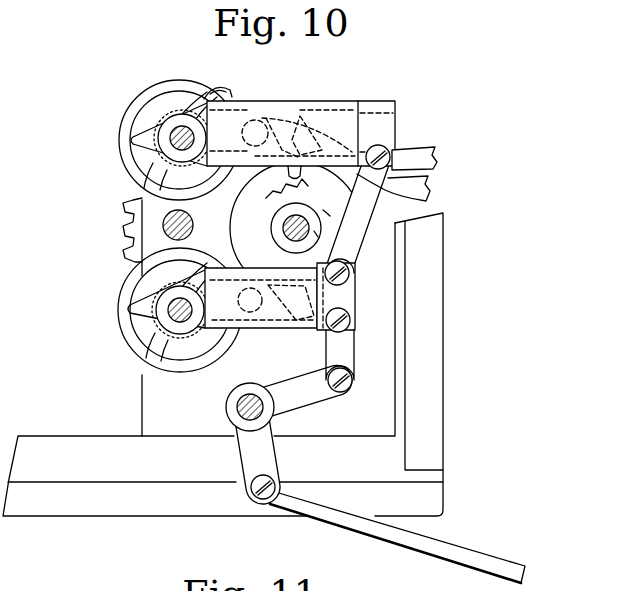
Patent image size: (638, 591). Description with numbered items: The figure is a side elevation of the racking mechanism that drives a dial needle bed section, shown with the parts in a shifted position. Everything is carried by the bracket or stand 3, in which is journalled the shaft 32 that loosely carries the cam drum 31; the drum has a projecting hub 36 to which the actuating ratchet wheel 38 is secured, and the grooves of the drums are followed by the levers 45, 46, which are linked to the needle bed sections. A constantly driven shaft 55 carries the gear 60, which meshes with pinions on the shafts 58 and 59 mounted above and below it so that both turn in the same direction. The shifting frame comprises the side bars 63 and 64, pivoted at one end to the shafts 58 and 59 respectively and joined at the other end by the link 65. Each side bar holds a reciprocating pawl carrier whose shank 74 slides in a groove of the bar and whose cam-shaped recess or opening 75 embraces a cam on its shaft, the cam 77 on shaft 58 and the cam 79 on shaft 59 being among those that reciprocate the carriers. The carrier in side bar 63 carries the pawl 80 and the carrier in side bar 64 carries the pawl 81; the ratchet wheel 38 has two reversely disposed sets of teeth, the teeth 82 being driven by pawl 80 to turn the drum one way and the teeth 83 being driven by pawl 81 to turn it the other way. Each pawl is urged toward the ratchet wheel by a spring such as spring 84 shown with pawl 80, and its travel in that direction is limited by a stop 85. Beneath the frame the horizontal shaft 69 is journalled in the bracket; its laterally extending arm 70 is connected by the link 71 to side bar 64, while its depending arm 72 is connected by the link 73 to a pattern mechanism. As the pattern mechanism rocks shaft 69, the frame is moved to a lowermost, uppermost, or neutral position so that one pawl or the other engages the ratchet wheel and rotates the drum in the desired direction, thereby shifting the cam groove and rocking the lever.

The bracket or stand 3 is at (438, 366).
The cam drum 31 is at (232, 206).
The shaft 32 is at (283, 229).
The projecting hub 36 is at (316, 234).
The actuating ratchet wheel 38 is at (330, 214).
The lever 45 is at (424, 152).
The lever 46 is at (422, 190).
The shaft 55 is at (172, 230).
The shaft 58 is at (170, 141).
The shaft 59 is at (168, 318).
The gear 60 is at (125, 214).
The side bar 63 is at (350, 104).
The side bar 64 is at (268, 330).
The link 65 is at (405, 203).
The horizontal shaft 69 is at (238, 407).
The laterally extending arm 70 is at (300, 384).
The link 71 is at (347, 348).
The depending arm 72 is at (242, 452).
The link 73 is at (452, 547).
The shank 74 is at (248, 120).
The cam-shaped recess or opening 75 is at (222, 93).
The cam 77 is at (143, 130).
The cam 79 is at (132, 308).
The pawl 80 is at (300, 174).
The pawl 81 is at (252, 318).
The ratchet teeth 82 is at (283, 190).
The ratchet teeth 83 is at (351, 266).
The spring 84 is at (302, 142).
The stop 85 is at (278, 148).